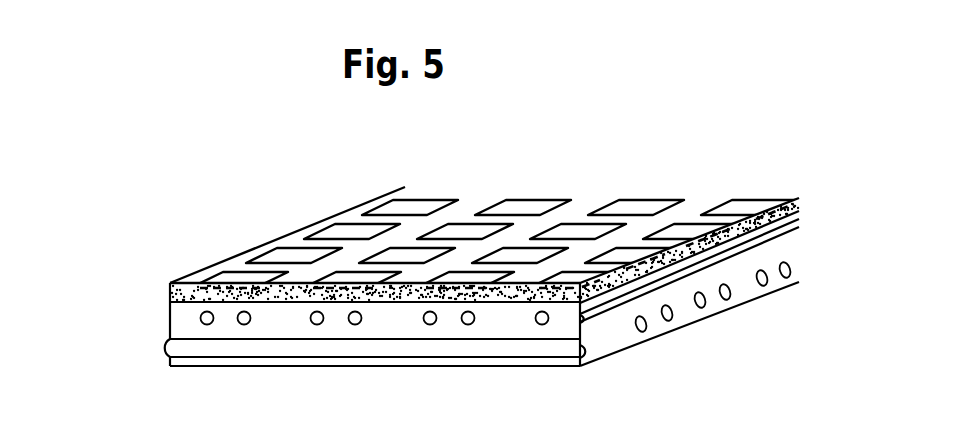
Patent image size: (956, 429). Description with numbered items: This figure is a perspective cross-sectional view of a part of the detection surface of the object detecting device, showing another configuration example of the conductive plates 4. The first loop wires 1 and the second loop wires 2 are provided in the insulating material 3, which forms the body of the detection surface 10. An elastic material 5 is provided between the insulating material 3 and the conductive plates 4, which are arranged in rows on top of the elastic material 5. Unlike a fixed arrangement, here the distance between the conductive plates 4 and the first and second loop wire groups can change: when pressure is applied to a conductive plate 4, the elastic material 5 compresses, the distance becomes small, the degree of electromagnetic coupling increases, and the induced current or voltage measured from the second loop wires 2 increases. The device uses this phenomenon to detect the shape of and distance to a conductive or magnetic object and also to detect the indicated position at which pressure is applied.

The first loop wire 1 is at (643, 333).
The second loop wire 2 is at (545, 325).
The insulating material 3 is at (210, 332).
The conductive plate 4 is at (214, 284).
The elastic material 5 is at (170, 297).
The multilayer substrate 10 is at (482, 195).